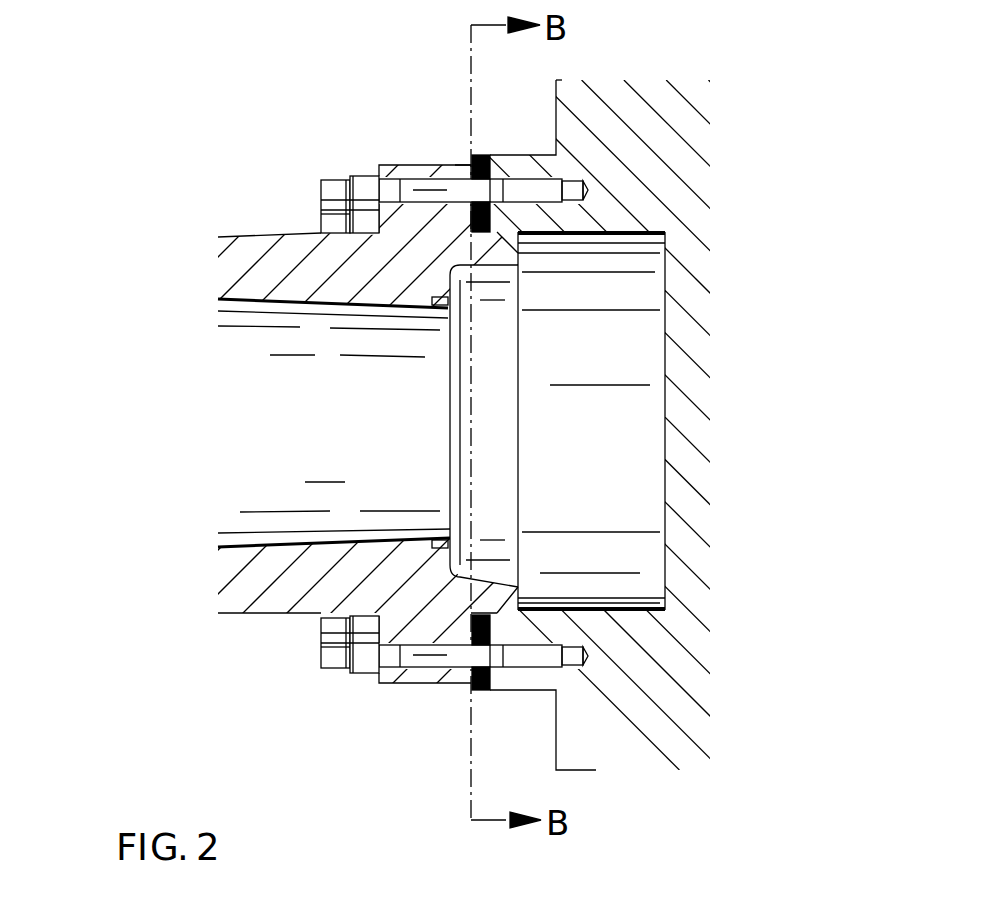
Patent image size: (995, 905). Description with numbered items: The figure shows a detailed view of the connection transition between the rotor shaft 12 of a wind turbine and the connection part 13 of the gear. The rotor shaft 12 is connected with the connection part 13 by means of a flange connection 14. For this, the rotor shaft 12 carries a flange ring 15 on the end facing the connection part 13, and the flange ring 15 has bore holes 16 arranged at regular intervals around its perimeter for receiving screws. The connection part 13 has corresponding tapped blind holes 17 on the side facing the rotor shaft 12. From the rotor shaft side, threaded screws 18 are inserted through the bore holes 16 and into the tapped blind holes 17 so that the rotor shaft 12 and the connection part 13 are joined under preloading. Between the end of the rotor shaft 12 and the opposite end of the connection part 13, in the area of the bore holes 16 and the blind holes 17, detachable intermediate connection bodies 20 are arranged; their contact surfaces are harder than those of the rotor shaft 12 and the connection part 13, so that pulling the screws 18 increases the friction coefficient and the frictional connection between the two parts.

The rotor shaft 12 is at (288, 258).
The connection part 13 is at (598, 120).
The flange connection 14 is at (458, 153).
The flange ring 15 is at (393, 175).
The bore holes 16 is at (418, 177).
The tapped blind holes 17 is at (523, 117).
The screws 18 is at (365, 192).
The intermediate connection bodies 20 is at (477, 692).